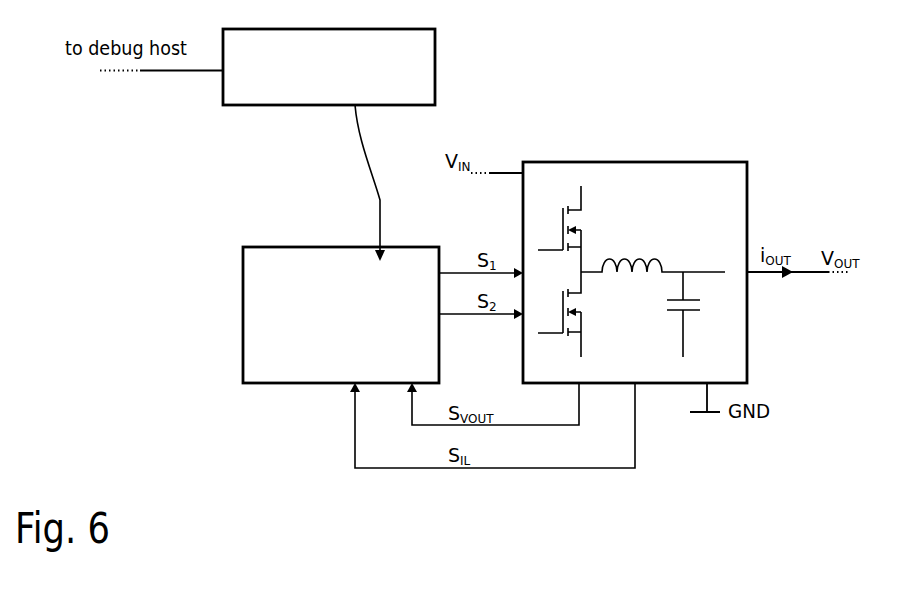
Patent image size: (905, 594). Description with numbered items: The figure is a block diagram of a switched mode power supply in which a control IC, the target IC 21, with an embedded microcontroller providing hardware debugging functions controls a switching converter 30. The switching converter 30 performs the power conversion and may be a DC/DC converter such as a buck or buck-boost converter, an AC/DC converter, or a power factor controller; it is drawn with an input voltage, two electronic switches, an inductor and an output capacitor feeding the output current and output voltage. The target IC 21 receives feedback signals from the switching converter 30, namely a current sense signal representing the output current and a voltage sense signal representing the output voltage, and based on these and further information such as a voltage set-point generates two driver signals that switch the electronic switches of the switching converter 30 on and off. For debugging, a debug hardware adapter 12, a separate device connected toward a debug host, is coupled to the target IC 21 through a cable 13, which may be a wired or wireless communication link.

The debug hardware adapter 12 is at (329, 67).
The cable 13 is at (380, 204).
The target IC 21 is at (341, 315).
The switching converter 30 is at (635, 259).